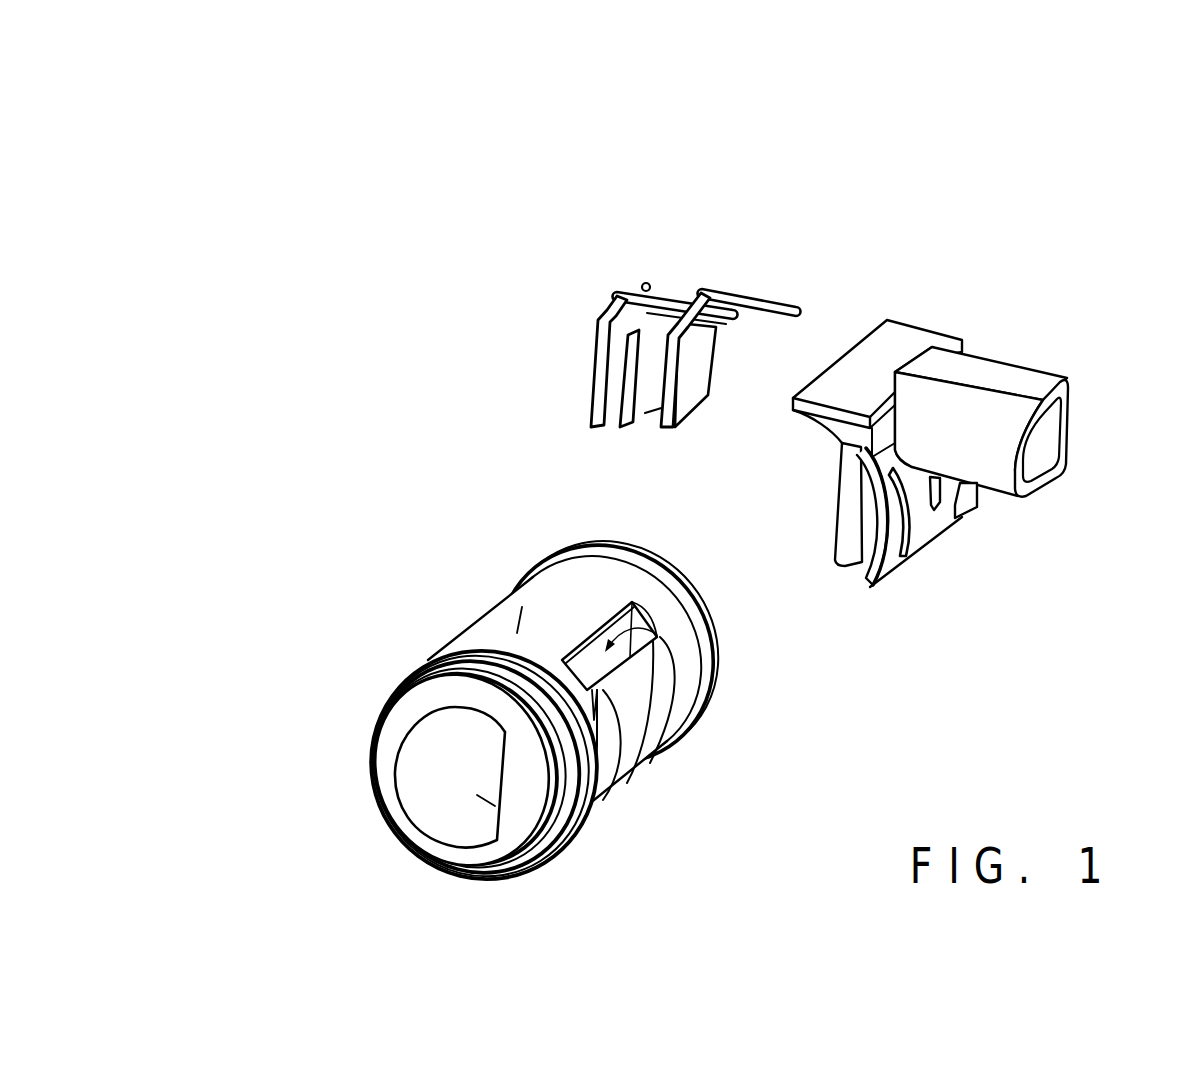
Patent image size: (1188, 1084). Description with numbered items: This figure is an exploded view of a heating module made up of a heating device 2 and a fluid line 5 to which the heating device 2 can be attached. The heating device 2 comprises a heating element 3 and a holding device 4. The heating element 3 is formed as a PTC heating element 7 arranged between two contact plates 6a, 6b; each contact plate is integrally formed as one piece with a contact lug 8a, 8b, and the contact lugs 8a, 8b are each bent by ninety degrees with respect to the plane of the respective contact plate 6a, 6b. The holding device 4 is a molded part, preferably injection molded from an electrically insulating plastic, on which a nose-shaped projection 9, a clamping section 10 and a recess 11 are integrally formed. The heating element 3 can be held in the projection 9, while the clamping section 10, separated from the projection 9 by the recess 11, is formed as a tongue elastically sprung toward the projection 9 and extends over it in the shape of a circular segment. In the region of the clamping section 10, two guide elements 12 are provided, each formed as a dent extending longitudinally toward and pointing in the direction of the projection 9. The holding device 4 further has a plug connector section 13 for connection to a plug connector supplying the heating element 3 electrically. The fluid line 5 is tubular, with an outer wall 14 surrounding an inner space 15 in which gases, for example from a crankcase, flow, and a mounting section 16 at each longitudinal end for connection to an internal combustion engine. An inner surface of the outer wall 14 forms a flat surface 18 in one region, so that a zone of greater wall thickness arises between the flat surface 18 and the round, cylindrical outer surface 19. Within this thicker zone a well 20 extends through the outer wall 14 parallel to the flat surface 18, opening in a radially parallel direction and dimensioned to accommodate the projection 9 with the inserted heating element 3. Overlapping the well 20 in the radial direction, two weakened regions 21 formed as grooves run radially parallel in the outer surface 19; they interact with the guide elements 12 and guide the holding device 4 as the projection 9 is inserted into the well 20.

The heating device 2 is at (572, 106).
The heating element 3 is at (733, 453).
The holding device 4 is at (998, 263).
The fluid line 5 is at (330, 537).
The contact plate 6a is at (600, 347).
The contact plate 6b is at (618, 424).
The PTC heating element 7 is at (636, 378).
The contact lug 8a is at (643, 298).
The contact lug 8b is at (748, 295).
The nose-shaped projection 9 is at (855, 520).
The clamping section 10 is at (933, 527).
The recess 11 is at (865, 573).
The guide element 12 is at (978, 502).
The plug connector section 13 is at (1017, 382).
The outer wall 14 is at (392, 739).
The inner space 15 is at (432, 779).
The mounting section 16 is at (545, 557).
The flat surface 18 is at (495, 805).
The outer surface 19 is at (512, 628).
The well 20 is at (698, 692).
The weakened region 21 is at (622, 797).